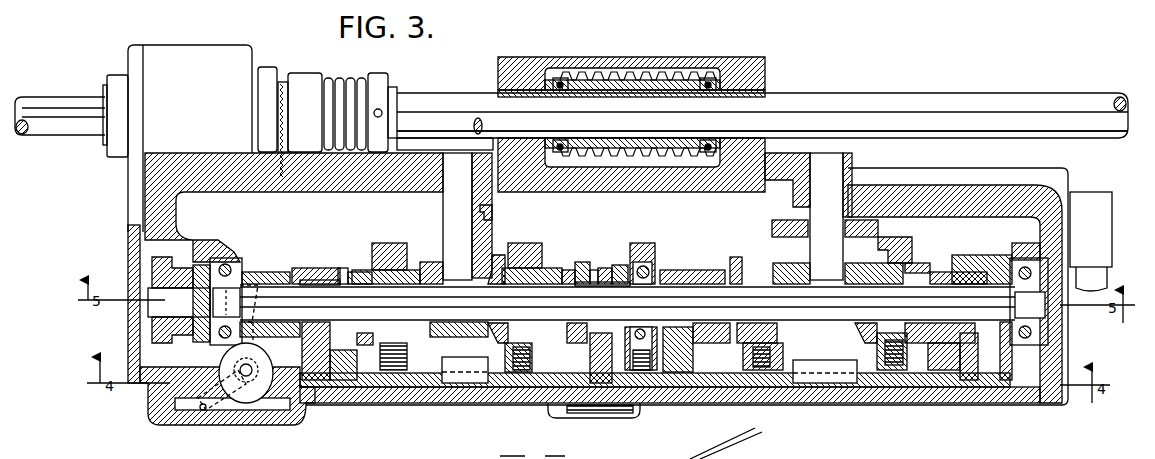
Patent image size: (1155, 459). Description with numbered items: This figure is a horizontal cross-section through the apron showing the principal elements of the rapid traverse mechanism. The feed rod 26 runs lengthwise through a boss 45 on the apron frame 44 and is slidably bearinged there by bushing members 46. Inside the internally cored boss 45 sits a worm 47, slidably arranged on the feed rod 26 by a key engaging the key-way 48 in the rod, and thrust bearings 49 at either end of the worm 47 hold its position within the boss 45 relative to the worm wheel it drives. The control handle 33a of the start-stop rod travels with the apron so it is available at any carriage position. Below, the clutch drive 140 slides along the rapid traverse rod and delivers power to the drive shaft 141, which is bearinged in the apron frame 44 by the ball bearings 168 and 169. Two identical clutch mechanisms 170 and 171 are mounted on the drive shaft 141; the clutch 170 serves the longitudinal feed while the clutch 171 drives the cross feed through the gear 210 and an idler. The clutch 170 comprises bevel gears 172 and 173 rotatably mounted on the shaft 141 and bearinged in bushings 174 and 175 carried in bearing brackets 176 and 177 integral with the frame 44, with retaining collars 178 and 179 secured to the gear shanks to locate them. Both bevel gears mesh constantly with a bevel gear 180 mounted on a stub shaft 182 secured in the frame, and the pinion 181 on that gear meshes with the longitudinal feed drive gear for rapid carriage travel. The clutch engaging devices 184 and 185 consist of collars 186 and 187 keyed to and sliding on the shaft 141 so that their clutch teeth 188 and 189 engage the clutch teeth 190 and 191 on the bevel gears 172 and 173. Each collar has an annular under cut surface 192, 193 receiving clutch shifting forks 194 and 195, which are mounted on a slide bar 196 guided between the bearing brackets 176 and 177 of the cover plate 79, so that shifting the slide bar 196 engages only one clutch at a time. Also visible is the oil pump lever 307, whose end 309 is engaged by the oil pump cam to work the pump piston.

The feed rod 26 is at (846, 86).
The control handle 33a is at (1108, 197).
The apron frame 44 is at (229, 153).
The boss 45 is at (651, 70).
The bushing members 46 is at (498, 92).
The worm 47 is at (606, 80).
The key-way 48 is at (898, 117).
The thrust bearings 49 is at (558, 78).
The cover plate 79 is at (492, 390).
The clutch drive 140 is at (268, 75).
The drive shaft 141 is at (258, 280).
The ball bearing 168 is at (216, 330).
The ball bearing 169 is at (643, 260).
The clutch mechanism 170 is at (478, 335).
The clutch mechanism 171 is at (844, 336).
The bevel gear 172 is at (420, 388).
The bevel gear 173 is at (506, 390).
The bushing 174 is at (388, 248).
The bushing 175 is at (571, 258).
The bearing bracket 176 is at (405, 250).
The bearing bracket 177 is at (538, 262).
The retaining collar 178 is at (356, 392).
The retaining collar 179 is at (546, 388).
The bevel gear 180 is at (504, 262).
The pinion 181 is at (488, 215).
The stub shaft 182 is at (448, 186).
The clutch engaging device 184 is at (343, 266).
The clutch engaging device 185 is at (578, 282).
The clutch collar 186 is at (308, 280).
The clutch collar 187 is at (622, 262).
The clutch teeth 188 is at (338, 268).
The clutch teeth 189 is at (598, 262).
The clutch teeth 190 is at (354, 270).
The clutch teeth 191 is at (567, 282).
The annular under cut surface 192 is at (306, 270).
The annular under cut surface 193 is at (604, 282).
The clutch shifting fork 194 is at (318, 398).
The clutch shifting fork 195 is at (632, 388).
The slide bar 196 is at (381, 390).
The gear 210 is at (876, 227).
The lever 307 is at (247, 340).
The end of lever 309 is at (222, 242).